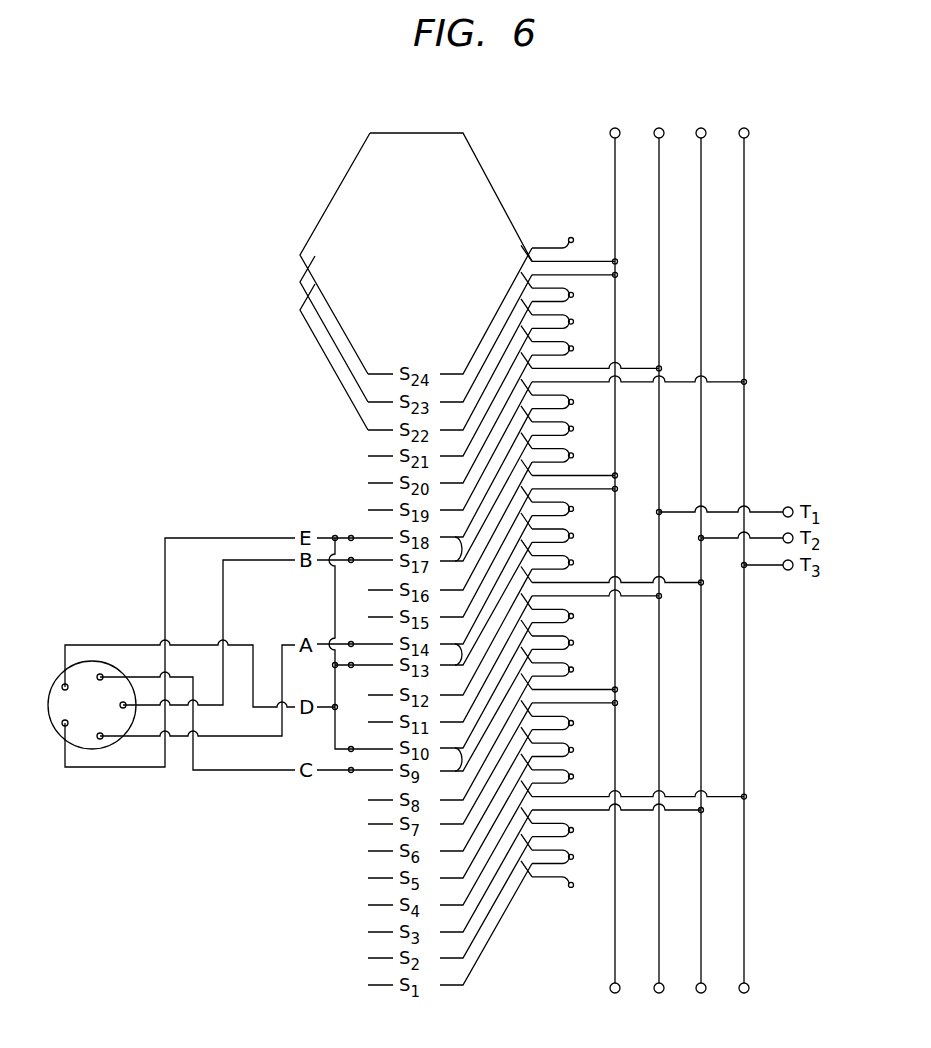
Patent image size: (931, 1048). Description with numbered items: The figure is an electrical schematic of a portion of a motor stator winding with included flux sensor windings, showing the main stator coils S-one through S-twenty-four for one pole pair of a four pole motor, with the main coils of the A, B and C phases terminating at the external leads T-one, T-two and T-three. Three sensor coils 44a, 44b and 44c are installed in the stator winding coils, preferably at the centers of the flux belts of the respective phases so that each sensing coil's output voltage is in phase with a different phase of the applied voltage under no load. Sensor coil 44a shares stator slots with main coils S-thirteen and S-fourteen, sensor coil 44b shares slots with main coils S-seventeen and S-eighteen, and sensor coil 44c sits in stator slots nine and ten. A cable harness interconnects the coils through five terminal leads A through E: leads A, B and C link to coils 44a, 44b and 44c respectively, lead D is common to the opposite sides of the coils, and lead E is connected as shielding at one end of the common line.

The sensor coil 44a is at (362, 645).
The sensor coil 44b is at (362, 537).
The sensor coil 44c is at (362, 771).